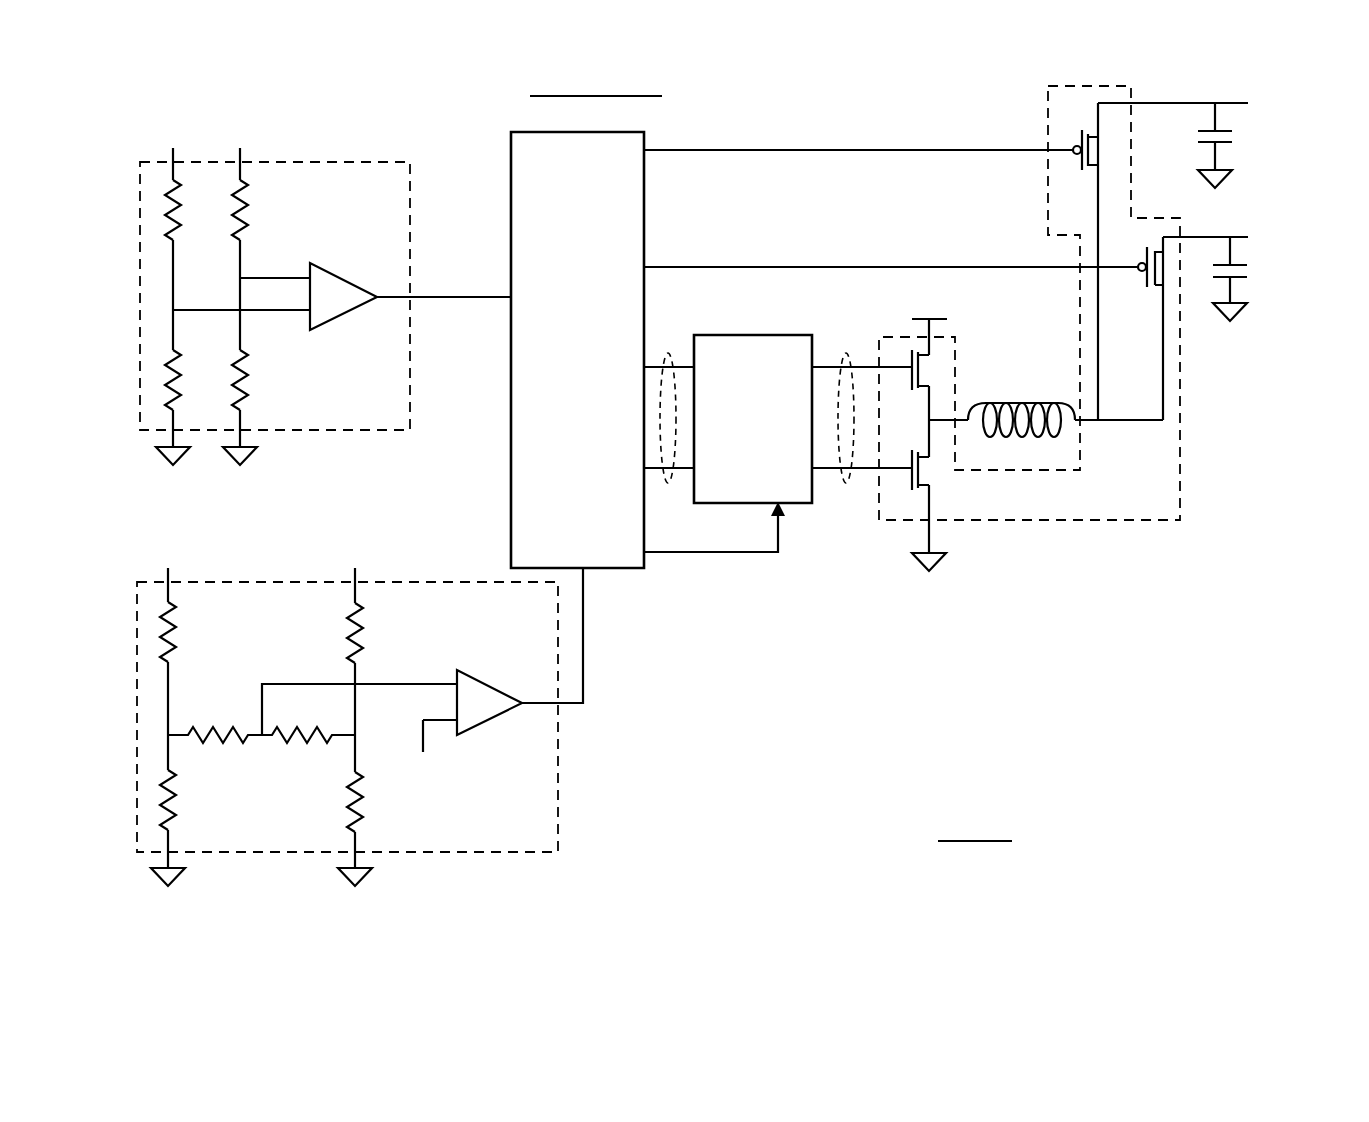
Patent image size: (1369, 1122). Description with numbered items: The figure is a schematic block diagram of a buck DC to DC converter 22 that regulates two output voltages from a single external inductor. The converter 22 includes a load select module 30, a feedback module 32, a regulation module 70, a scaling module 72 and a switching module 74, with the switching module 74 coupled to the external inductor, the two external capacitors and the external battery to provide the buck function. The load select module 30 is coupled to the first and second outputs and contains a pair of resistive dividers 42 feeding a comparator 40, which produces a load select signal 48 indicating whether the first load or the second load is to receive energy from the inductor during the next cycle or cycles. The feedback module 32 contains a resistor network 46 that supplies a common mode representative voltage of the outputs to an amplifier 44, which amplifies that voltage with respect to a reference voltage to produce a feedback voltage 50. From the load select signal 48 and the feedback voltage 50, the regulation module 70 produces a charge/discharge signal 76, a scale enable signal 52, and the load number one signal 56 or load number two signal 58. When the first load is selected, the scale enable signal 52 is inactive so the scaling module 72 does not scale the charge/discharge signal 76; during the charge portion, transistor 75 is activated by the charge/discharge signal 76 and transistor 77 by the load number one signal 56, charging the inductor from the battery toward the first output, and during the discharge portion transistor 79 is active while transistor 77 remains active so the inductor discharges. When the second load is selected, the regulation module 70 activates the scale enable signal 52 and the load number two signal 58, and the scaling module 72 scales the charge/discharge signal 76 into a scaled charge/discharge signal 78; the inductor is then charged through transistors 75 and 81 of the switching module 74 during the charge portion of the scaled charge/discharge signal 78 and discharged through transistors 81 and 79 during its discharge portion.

The DC to DC converter 22 is at (727, 482).
The load select module 30 is at (275, 296).
The feedback module 32 is at (347, 712).
The comparator 40 is at (343, 281).
The resistive dividers 42 is at (201, 237).
The amplifier 44 is at (461, 711).
The resistor network 46 is at (260, 760).
The load select signal 48 is at (462, 288).
The feedback voltage 50 is at (615, 635).
The scale enable signal 52 is at (714, 557).
The load number 1 signal 56 is at (891, 252).
The load number 2 signal 58 is at (858, 136).
The regulation module 70 is at (586, 323).
The scaling module 72 is at (753, 419).
The switching module 74 is at (1093, 326).
The transistor 75 is at (932, 350).
The charge/discharge signal 76 is at (669, 342).
The transistor 77 is at (1221, 322).
The scaled charge/discharge signal 78 is at (845, 502).
The transistor 79 is at (932, 495).
The transistor 81 is at (1195, 255).